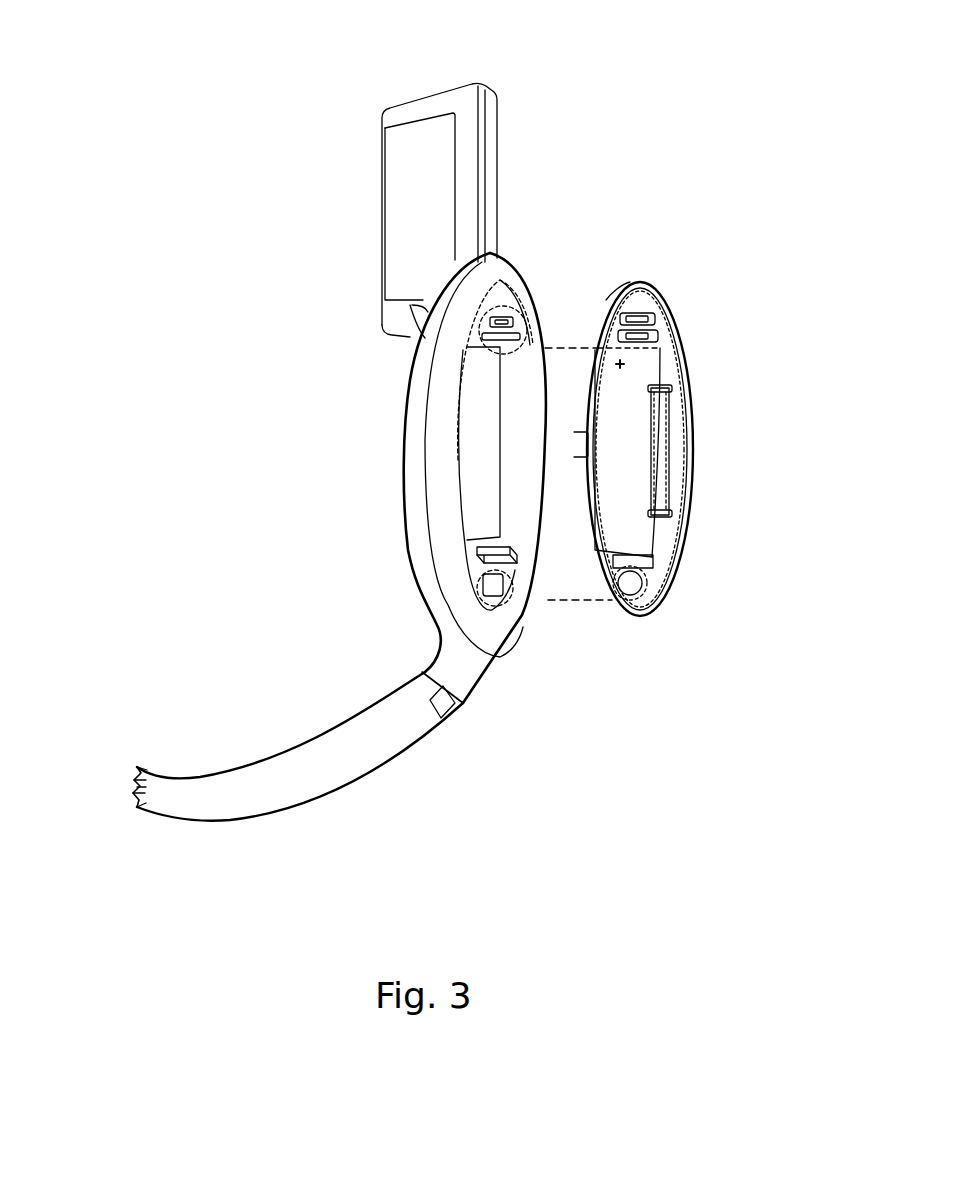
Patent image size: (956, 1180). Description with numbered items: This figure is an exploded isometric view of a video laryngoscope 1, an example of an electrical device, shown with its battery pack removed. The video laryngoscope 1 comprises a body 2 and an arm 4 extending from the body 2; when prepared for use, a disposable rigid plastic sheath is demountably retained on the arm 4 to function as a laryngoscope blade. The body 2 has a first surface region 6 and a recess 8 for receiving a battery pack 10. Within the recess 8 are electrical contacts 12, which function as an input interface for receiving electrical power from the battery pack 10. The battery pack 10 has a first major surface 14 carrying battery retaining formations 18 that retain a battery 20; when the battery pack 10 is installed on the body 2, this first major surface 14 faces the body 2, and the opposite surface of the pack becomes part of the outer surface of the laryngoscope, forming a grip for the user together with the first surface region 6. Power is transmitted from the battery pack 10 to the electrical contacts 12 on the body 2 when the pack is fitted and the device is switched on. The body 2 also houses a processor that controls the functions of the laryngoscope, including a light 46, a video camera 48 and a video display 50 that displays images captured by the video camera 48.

The video laryngoscope 1 is at (163, 480).
The body 2 is at (286, 457).
The arm 4 is at (365, 780).
The first surface region 6 is at (445, 498).
The recess 8 is at (477, 490).
The battery pack 10 is at (673, 587).
The electrical contacts 12 is at (508, 305).
The first major surface 14 is at (653, 293).
The battery retaining formations 18 is at (653, 560).
The battery 20 is at (605, 488).
The light 46 is at (125, 800).
The video camera 48 is at (132, 767).
The video display 50 is at (468, 107).